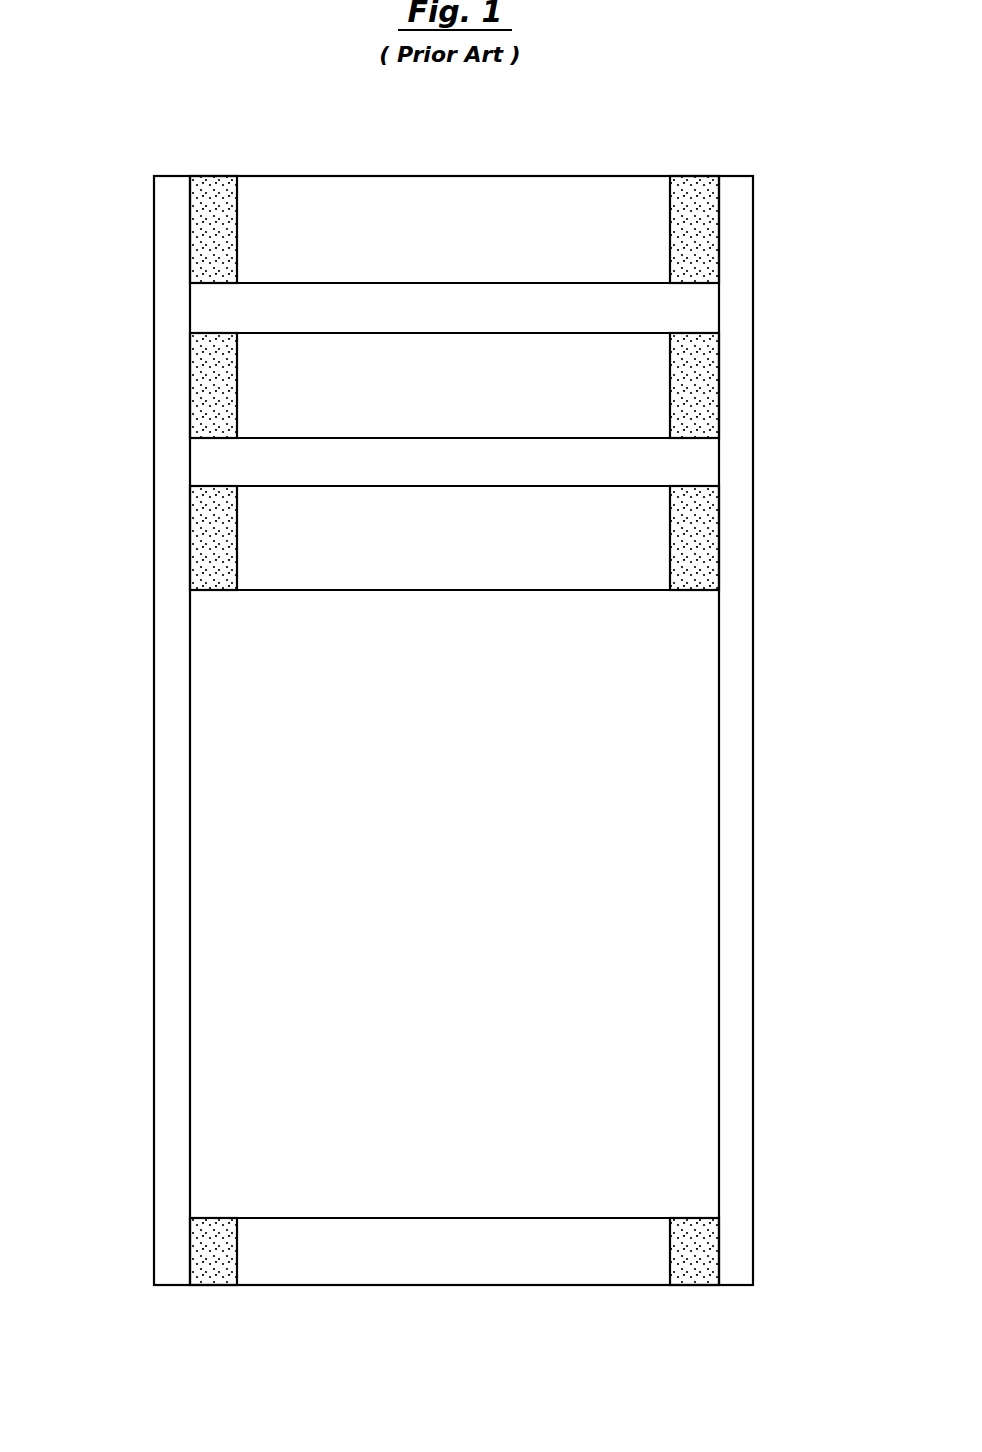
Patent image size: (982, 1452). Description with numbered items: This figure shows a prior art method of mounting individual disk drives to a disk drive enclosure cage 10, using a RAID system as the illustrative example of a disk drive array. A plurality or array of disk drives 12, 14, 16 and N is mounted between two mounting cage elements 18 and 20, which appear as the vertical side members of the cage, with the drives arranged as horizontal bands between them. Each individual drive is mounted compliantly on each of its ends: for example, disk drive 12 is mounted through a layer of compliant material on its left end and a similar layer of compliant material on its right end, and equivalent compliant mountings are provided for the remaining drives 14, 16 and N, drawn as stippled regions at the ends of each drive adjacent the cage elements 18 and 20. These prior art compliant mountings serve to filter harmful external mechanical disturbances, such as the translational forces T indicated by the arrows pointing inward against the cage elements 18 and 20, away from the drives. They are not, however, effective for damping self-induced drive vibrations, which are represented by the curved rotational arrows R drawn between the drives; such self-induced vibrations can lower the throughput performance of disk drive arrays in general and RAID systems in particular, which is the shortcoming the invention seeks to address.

The prior art bird cage structure 10 is at (627, 97).
The disk drive 12 is at (390, 195).
The disk drive 14 is at (390, 360).
The disk drive 16 is at (395, 517).
The mounting cage element 18 is at (177, 843).
The mounting cage element 20 is at (738, 822).
The disk drive N is at (383, 1240).
The translational forces T is at (134, 383).
The rotation direction R is at (415, 638).